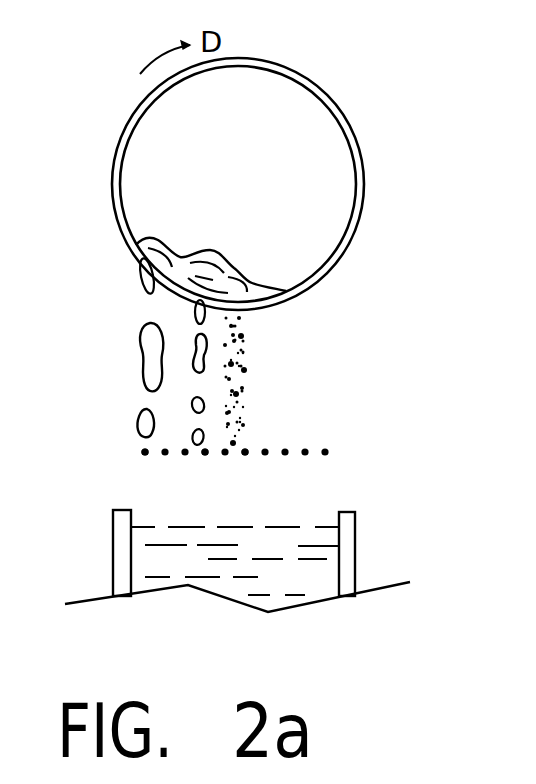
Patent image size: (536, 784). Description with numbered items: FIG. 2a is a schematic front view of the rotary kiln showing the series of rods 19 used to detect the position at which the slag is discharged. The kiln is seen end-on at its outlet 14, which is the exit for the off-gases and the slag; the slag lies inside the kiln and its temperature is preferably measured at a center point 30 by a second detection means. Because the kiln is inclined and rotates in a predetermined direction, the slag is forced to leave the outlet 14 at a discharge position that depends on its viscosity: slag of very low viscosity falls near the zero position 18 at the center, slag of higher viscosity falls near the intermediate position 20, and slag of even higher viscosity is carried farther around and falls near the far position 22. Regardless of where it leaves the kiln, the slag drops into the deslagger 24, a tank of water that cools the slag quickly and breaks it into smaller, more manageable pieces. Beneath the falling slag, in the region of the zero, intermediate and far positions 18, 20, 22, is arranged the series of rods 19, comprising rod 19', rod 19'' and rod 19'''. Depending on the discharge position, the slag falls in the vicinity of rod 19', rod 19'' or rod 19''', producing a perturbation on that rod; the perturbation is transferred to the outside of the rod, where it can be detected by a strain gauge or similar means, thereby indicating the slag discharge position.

The outlet 14 is at (242, 163).
The center point 30 is at (212, 258).
The zero position 18 is at (245, 370).
The series of rods 19 is at (259, 424).
The rod 19' is at (294, 483).
The rod 19'' is at (240, 483).
The rod 19''' is at (168, 483).
The intermediate position 20 is at (191, 410).
The far position 22 is at (152, 353).
The deslagger 24 is at (298, 547).